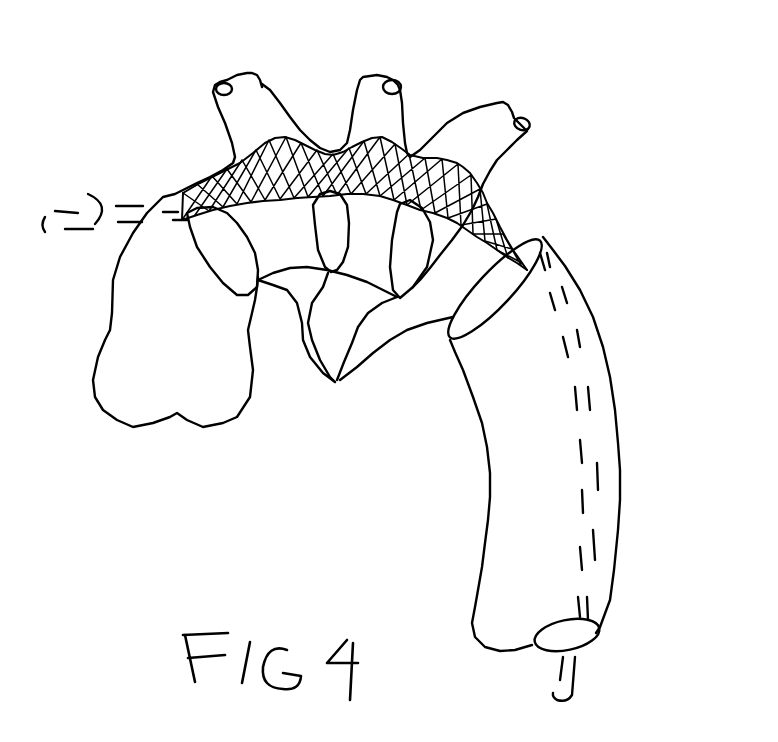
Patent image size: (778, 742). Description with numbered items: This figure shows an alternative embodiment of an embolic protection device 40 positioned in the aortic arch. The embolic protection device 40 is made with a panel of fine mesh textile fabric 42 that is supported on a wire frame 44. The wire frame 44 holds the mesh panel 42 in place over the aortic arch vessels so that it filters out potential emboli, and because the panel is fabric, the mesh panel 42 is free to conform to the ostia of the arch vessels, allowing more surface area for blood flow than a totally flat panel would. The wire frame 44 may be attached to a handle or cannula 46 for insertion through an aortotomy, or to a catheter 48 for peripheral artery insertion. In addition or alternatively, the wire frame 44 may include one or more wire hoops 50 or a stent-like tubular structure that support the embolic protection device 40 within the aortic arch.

The embolic protection device 40 is at (310, 164).
The panel of fine mesh textile fabric 42 is at (419, 184).
The wire frame 44 is at (402, 365).
The handle or cannula 46 is at (113, 187).
The catheter 48 is at (636, 477).
The wire hoops 50 is at (355, 334).